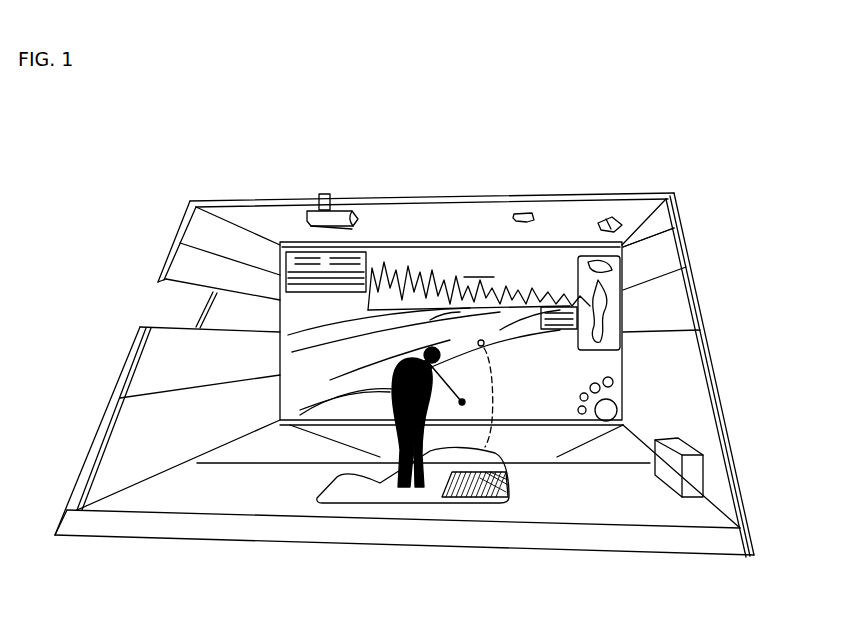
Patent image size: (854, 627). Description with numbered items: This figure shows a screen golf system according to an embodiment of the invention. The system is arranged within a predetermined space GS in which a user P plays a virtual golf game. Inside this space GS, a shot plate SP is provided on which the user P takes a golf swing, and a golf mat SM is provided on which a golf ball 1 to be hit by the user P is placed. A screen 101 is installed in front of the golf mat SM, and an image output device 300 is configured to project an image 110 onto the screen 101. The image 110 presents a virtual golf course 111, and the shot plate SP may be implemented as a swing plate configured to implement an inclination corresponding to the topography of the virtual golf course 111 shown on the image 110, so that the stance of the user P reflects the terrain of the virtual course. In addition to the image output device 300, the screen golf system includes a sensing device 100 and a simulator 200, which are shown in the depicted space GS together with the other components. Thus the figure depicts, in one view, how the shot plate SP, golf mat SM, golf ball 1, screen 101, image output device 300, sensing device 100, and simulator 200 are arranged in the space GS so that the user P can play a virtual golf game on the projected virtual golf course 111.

The predetermined space GS is at (167, 247).
The image 110 is at (630, 361).
The virtual golf course 111 is at (480, 268).
The screen 101 is at (677, 228).
The image output device 300 is at (353, 217).
The sensing device 100 is at (605, 217).
The simulator 200 is at (684, 447).
The shot plate SP is at (318, 481).
The golf mat SM is at (510, 483).
The user p is at (397, 380).
The golf ball 1 is at (486, 342).